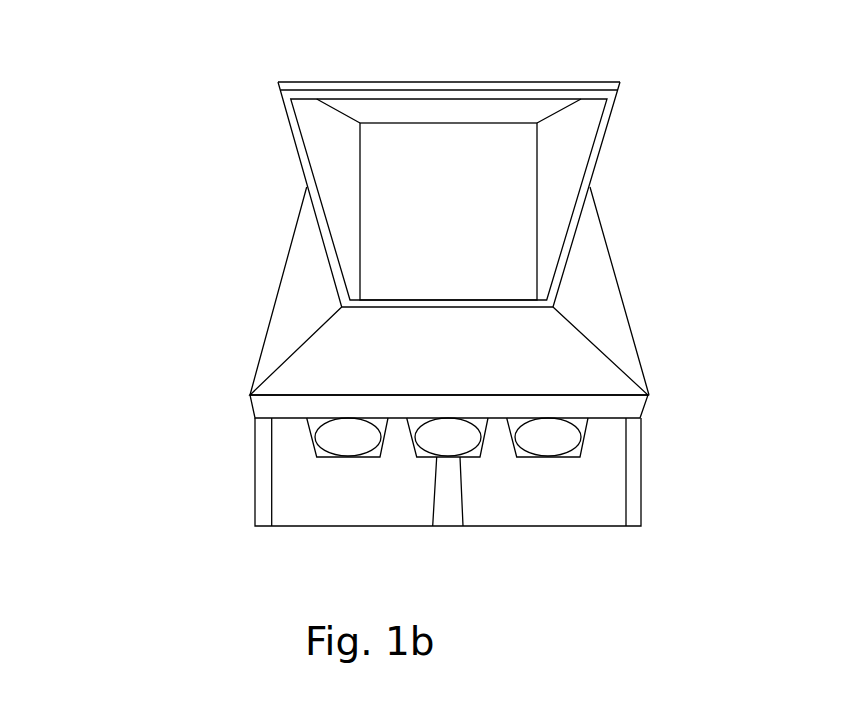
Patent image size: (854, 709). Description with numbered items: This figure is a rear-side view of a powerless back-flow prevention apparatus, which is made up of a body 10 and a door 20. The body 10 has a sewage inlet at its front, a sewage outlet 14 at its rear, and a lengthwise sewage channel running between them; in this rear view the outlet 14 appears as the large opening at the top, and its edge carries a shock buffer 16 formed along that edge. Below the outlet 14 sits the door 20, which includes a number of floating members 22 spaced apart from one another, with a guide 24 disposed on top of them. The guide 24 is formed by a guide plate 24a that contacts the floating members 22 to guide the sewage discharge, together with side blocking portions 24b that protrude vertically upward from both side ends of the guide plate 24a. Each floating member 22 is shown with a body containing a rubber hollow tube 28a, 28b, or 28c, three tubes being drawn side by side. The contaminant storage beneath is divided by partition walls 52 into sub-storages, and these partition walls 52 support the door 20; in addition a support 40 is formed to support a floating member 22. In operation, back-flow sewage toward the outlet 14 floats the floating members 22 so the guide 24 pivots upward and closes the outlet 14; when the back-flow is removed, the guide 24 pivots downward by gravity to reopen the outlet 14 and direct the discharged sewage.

The body 10 is at (490, 82).
The sewage outlet 14 is at (498, 232).
The shock buffer 16 is at (607, 118).
The door 20 is at (133, 370).
The floating members 22 is at (310, 428).
The guide 24 is at (180, 350).
The guide plate 24a is at (264, 406).
The side blocking portions 24b is at (282, 322).
The rubber hollow tube 28a is at (321, 461).
The rubber hollow tube 28b is at (420, 461).
The rubber hollow tube 28c is at (575, 461).
The support 40 is at (451, 493).
The partition walls 52 is at (633, 473).